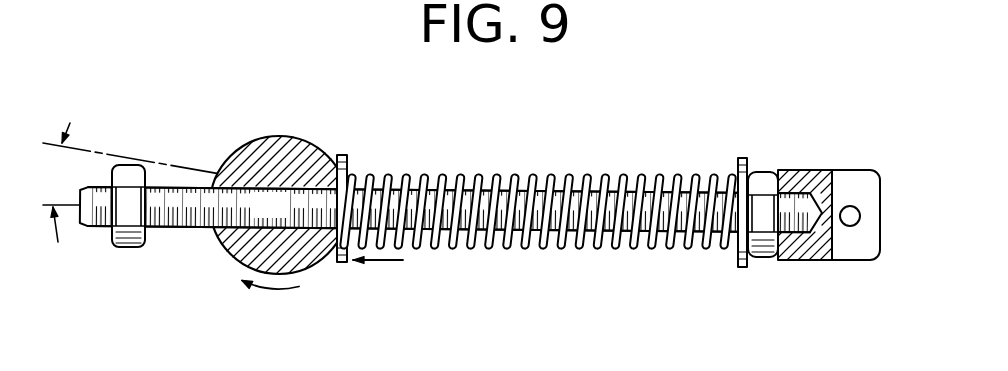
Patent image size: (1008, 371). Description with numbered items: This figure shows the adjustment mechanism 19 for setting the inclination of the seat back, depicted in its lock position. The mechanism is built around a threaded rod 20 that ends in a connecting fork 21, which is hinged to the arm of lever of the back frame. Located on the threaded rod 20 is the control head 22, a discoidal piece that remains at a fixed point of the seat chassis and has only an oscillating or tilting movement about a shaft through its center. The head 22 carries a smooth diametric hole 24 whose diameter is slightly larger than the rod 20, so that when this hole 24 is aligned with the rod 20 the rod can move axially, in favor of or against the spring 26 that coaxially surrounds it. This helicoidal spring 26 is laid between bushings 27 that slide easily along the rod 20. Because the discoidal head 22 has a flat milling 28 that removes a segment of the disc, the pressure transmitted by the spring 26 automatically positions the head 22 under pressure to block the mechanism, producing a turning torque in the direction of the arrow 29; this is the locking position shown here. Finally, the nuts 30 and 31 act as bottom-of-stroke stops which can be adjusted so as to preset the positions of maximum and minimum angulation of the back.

The adjustment mechanism 19 is at (578, 137).
The threaded rod 20 is at (190, 229).
The connecting fork 21 is at (852, 190).
The control head 22 is at (274, 142).
The diametric hole 24 is at (269, 205).
The spring 26 is at (517, 247).
The bushings 27 is at (428, 185).
The flat milling 28 is at (347, 160).
The arrow 29 is at (278, 290).
The nut 30 is at (770, 255).
The nut 31 is at (125, 247).